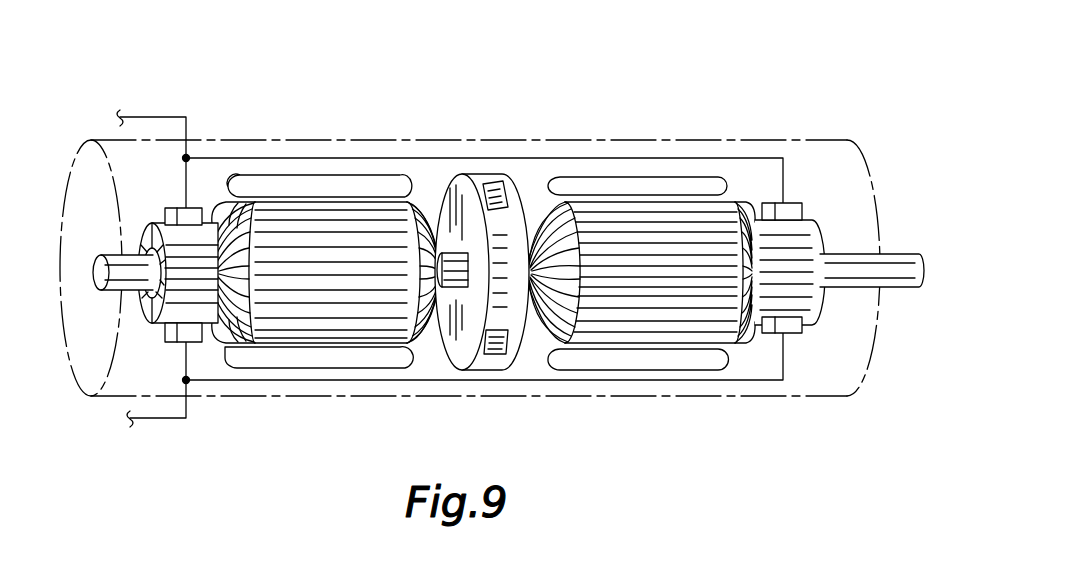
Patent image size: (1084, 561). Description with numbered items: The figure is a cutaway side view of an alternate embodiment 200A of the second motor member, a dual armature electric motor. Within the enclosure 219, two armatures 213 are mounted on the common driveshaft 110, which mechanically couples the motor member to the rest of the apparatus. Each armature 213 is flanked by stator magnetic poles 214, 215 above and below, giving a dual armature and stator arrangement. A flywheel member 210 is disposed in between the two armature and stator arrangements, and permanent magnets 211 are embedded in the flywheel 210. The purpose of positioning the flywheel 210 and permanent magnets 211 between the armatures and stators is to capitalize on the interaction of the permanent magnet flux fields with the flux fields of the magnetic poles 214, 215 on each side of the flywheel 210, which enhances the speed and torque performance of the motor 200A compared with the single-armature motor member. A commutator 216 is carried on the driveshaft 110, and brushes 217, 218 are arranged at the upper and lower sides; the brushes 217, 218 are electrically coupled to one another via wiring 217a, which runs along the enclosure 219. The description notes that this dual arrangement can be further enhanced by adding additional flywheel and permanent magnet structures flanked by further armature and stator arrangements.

The alternate embodiment of second motor member 200A is at (407, 103).
The common driveshaft 110 is at (108, 256).
The flywheel member 210 is at (459, 353).
The permanent magnets 211 is at (502, 188).
The armature 213 is at (322, 233).
The magnetic pole 214 is at (297, 368).
The magnetic pole 215 is at (297, 175).
The commutator 216 is at (185, 290).
The brush 217 is at (180, 208).
The wiring 217a is at (488, 158).
The brush 218 is at (198, 343).
The enclosure 219 is at (371, 157).